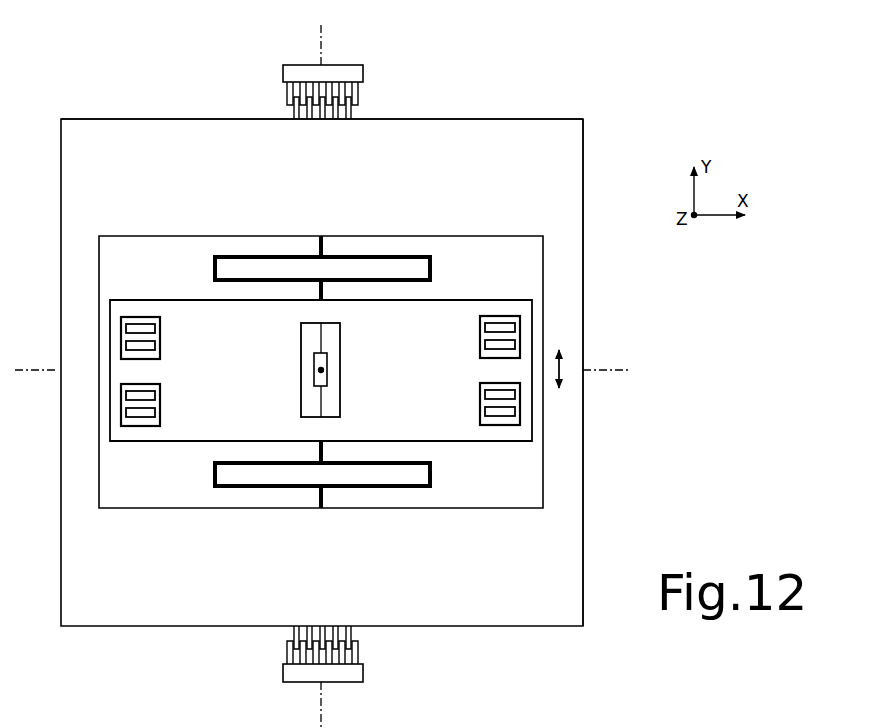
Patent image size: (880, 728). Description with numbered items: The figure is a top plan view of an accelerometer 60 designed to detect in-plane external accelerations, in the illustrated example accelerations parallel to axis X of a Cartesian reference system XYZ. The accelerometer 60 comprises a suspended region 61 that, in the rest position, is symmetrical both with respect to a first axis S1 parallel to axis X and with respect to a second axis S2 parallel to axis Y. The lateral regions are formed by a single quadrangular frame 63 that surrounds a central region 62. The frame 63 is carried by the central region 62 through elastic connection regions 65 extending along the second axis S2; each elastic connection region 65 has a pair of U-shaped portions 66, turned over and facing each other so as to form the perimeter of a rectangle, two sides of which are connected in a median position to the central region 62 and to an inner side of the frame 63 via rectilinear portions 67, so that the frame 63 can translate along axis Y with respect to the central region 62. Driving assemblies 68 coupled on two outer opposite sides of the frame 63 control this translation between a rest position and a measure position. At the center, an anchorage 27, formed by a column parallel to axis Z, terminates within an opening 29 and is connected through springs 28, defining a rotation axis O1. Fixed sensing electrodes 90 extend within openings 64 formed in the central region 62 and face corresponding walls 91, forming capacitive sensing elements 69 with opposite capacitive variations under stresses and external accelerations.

The accelerometer 60 is at (637, 159).
The suspended region 61 is at (594, 143).
The central region 62 is at (451, 302).
The frame 63 is at (538, 128).
The openings 64 is at (160, 338).
The elastic connection regions 65 is at (445, 262).
The U-shaped portions 66 is at (237, 257).
The rectilinear portions 67 is at (324, 248).
The driving assemblies 68 is at (370, 98).
The capacitive sensing elements 69 is at (112, 340).
The fixed sensing electrodes 90 is at (132, 346).
The walls 91 is at (154, 314).
The anchorage 27 is at (315, 362).
The springs 28 is at (312, 335).
The opening 29 is at (306, 404).
The rotation axis O1 is at (321, 370).
The first axis S1 is at (608, 369).
The second axis S2 is at (321, 48).